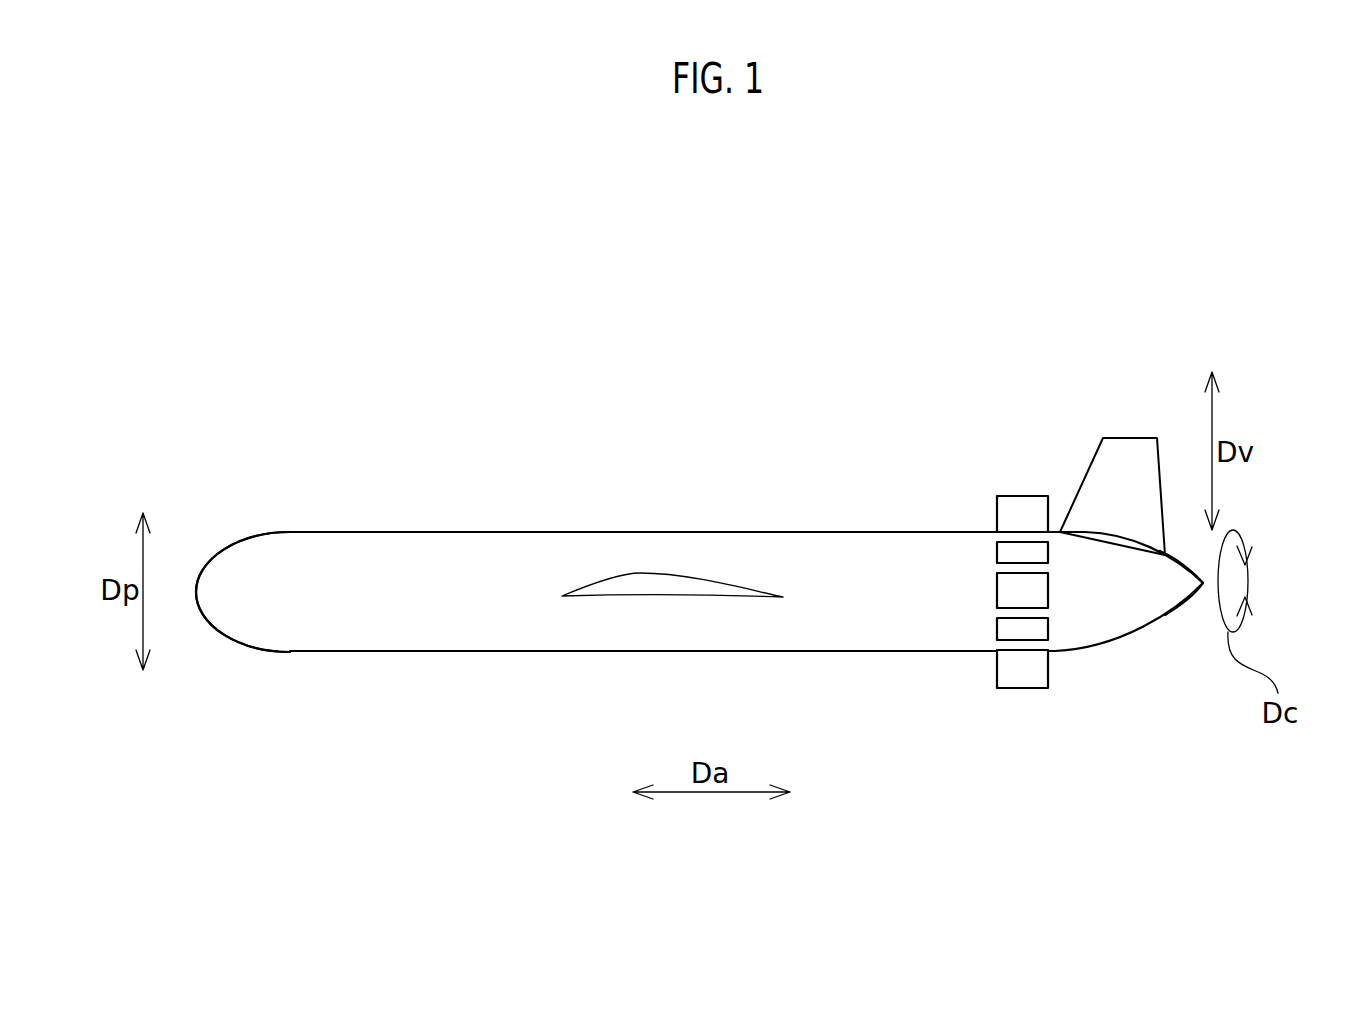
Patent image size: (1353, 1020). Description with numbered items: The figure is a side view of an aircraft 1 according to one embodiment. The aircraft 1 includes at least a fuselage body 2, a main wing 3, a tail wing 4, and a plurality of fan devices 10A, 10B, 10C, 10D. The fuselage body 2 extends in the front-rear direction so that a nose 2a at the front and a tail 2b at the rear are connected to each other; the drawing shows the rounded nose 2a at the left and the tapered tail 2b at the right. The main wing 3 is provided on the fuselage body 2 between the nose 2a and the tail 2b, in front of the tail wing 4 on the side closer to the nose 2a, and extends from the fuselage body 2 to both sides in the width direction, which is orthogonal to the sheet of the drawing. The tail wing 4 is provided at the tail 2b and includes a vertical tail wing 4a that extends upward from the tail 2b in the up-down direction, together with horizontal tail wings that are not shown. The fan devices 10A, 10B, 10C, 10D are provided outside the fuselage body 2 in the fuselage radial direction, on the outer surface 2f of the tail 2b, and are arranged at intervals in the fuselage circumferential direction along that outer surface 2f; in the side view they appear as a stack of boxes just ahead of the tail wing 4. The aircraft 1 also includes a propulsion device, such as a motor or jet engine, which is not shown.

The aircraft 1 is at (686, 560).
The fuselage body 2 is at (408, 522).
The nose 2a is at (198, 576).
The tail 2b is at (1205, 590).
The outer surface 2f is at (917, 557).
The main wing 3 is at (650, 573).
The tail wing 4 is at (1113, 430).
The vertical tail wing 4a is at (1122, 438).
The fan device 10A is at (997, 511).
The control unit 10B is at (997, 552).
The control unit 10C is at (997, 593).
The control unit 10D is at (997, 628).